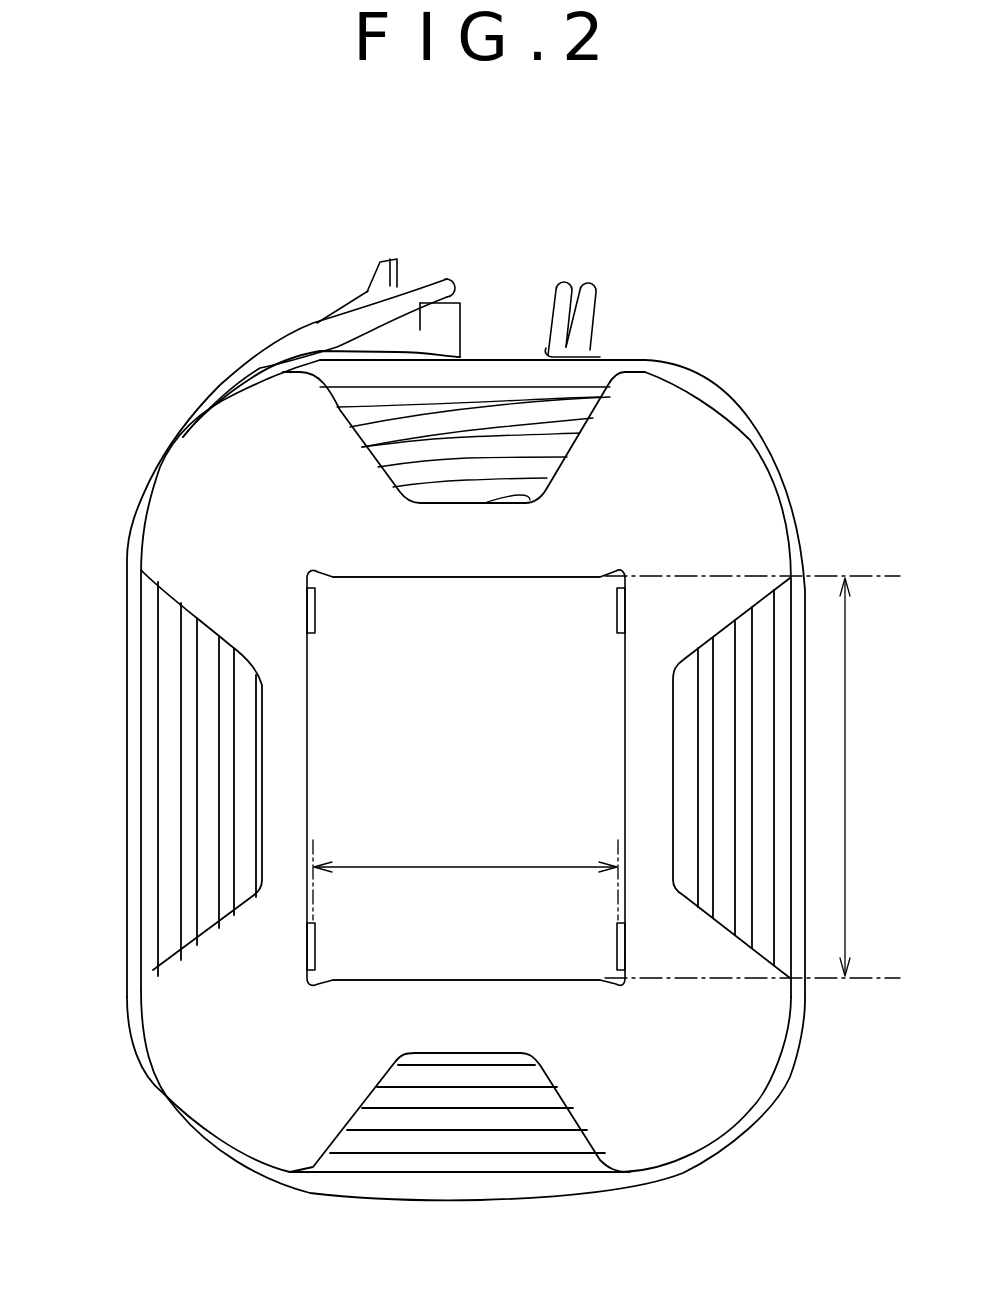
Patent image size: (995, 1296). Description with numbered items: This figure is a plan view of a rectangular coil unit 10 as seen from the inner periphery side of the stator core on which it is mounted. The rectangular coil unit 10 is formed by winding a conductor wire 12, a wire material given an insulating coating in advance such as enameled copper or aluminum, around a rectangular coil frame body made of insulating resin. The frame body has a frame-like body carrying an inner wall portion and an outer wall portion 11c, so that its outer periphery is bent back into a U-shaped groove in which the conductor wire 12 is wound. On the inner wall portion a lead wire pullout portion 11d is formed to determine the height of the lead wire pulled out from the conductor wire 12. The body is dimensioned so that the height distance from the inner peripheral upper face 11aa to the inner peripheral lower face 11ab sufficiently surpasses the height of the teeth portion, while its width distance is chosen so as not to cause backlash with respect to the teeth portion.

The rectangular coil unit 10 is at (755, 222).
The inner peripheral upper face 11aa is at (470, 578).
The inner peripheral lower face 11ab is at (377, 979).
The outer wall portion 11c is at (152, 531).
The lead wire pullout portion 11d is at (403, 257).
The conductor wire 12 is at (148, 895).